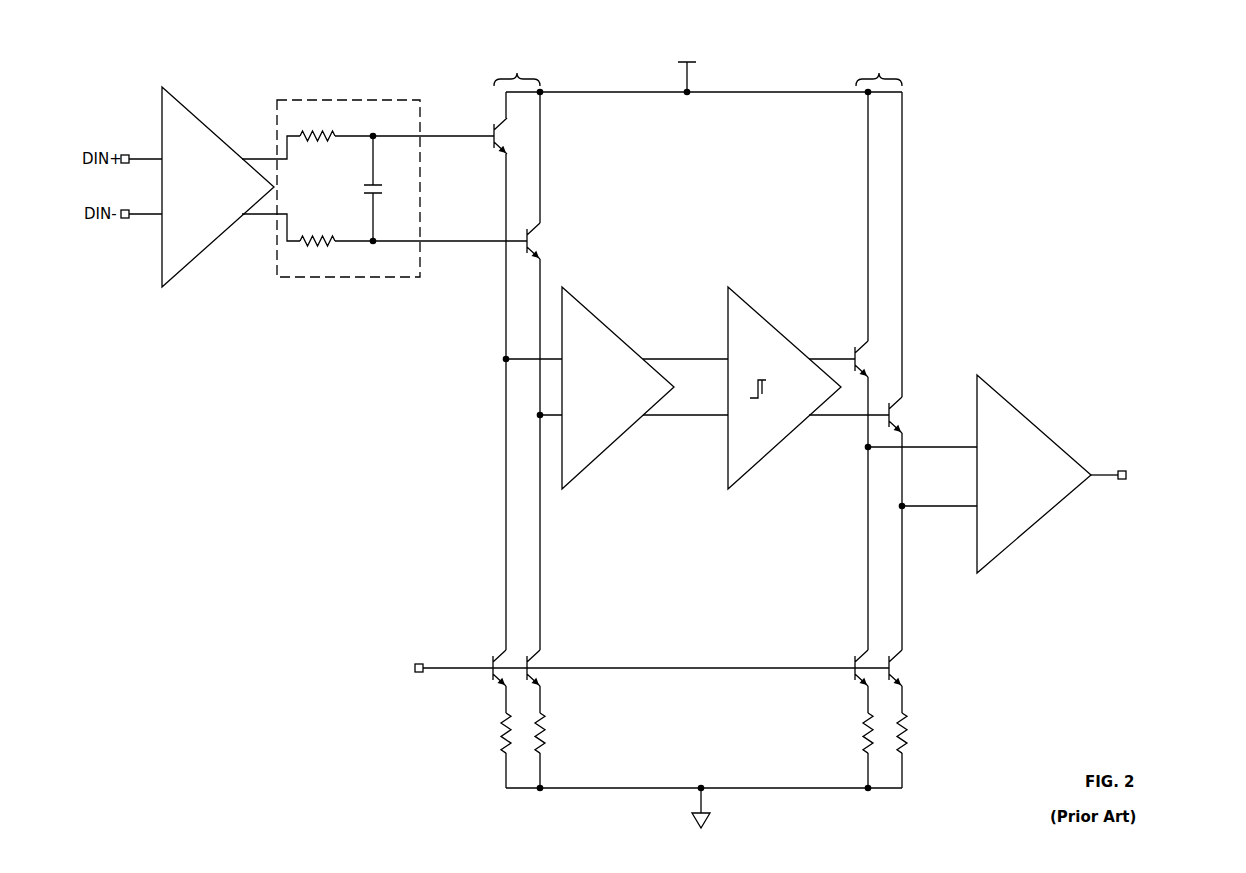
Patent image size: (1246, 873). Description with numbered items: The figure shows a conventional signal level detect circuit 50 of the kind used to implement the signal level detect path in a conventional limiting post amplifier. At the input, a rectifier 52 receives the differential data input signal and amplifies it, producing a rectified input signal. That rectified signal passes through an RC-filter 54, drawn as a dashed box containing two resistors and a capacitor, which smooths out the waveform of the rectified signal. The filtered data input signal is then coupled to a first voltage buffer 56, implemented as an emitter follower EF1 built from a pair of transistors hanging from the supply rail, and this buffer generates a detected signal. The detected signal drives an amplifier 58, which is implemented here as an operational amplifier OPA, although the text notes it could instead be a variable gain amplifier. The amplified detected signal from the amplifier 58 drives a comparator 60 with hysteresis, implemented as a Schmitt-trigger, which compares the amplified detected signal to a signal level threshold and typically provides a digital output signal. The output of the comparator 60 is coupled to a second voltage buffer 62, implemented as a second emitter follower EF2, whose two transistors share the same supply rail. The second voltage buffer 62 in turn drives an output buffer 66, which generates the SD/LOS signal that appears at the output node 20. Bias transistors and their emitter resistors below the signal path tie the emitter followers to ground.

The conventional signal level detect circuit 50 is at (1006, 66).
The rectifier 52 is at (214, 133).
The RC-filter 54 is at (379, 100).
The first voltage buffer 56 is at (506, 146).
The amplifier 58 is at (624, 333).
The comparator 60 is at (790, 333).
The second voltage buffer 62 is at (891, 233).
The output buffer 66 is at (1039, 420).
The node 20 is at (1100, 471).